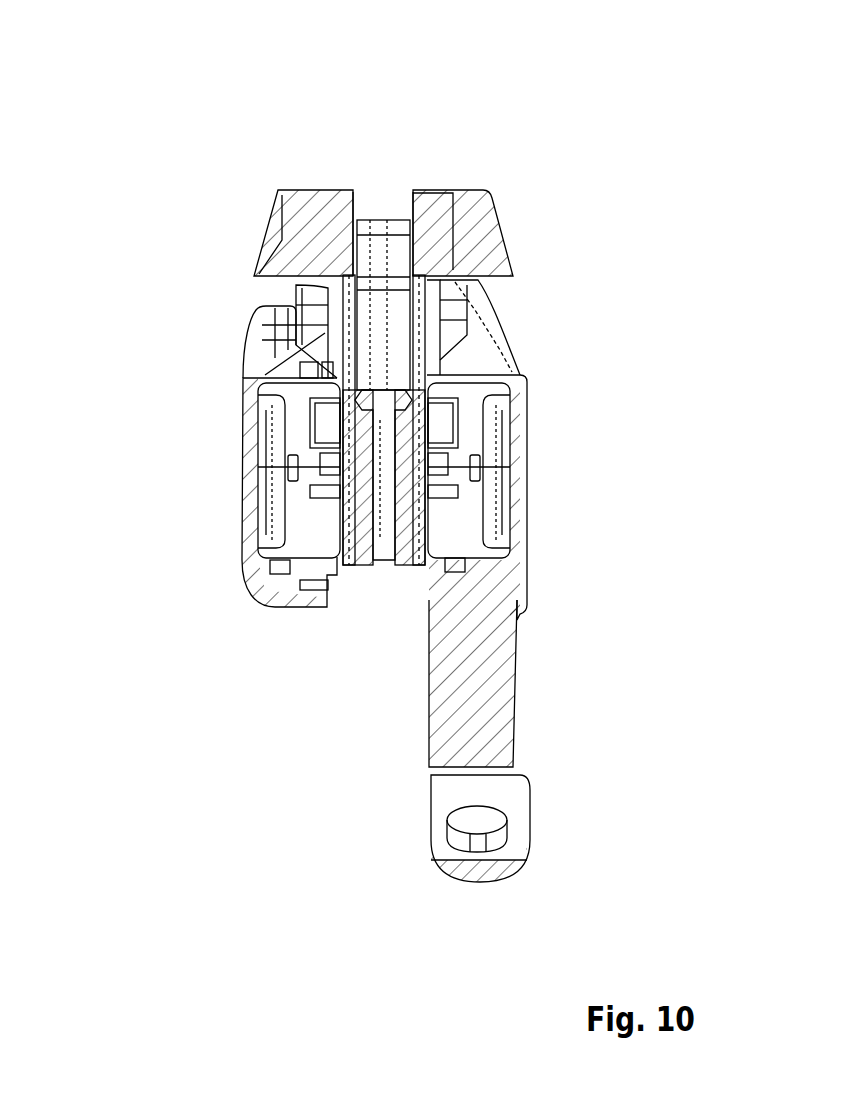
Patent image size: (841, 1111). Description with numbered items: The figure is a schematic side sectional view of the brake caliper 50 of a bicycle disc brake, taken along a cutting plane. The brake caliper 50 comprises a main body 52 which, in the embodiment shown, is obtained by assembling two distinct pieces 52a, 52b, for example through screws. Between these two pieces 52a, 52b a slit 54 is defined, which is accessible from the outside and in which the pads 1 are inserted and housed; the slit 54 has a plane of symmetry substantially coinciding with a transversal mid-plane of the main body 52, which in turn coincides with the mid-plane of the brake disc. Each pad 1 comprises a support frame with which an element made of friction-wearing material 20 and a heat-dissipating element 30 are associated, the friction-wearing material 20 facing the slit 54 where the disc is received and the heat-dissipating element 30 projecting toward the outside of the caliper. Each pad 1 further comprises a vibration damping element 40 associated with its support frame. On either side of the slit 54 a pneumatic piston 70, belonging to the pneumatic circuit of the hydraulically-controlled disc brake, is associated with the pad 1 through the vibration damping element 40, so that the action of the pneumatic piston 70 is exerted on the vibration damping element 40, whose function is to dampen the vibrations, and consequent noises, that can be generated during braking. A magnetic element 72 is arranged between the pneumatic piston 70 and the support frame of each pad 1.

The brake caliper 50 is at (212, 78).
The main body 52 is at (397, 168).
The pad 1 is at (322, 178).
The heat-dissipating element 30 is at (318, 232).
The pneumatic piston 70 is at (278, 397).
The vibration damping element 40 is at (258, 466).
The first piece of the main body 52a is at (252, 525).
The second piece of the main body 52b is at (512, 520).
The magnetic element 72 is at (328, 473).
The slit 54 is at (387, 480).
The element made of friction-wearing material 20 is at (383, 515).